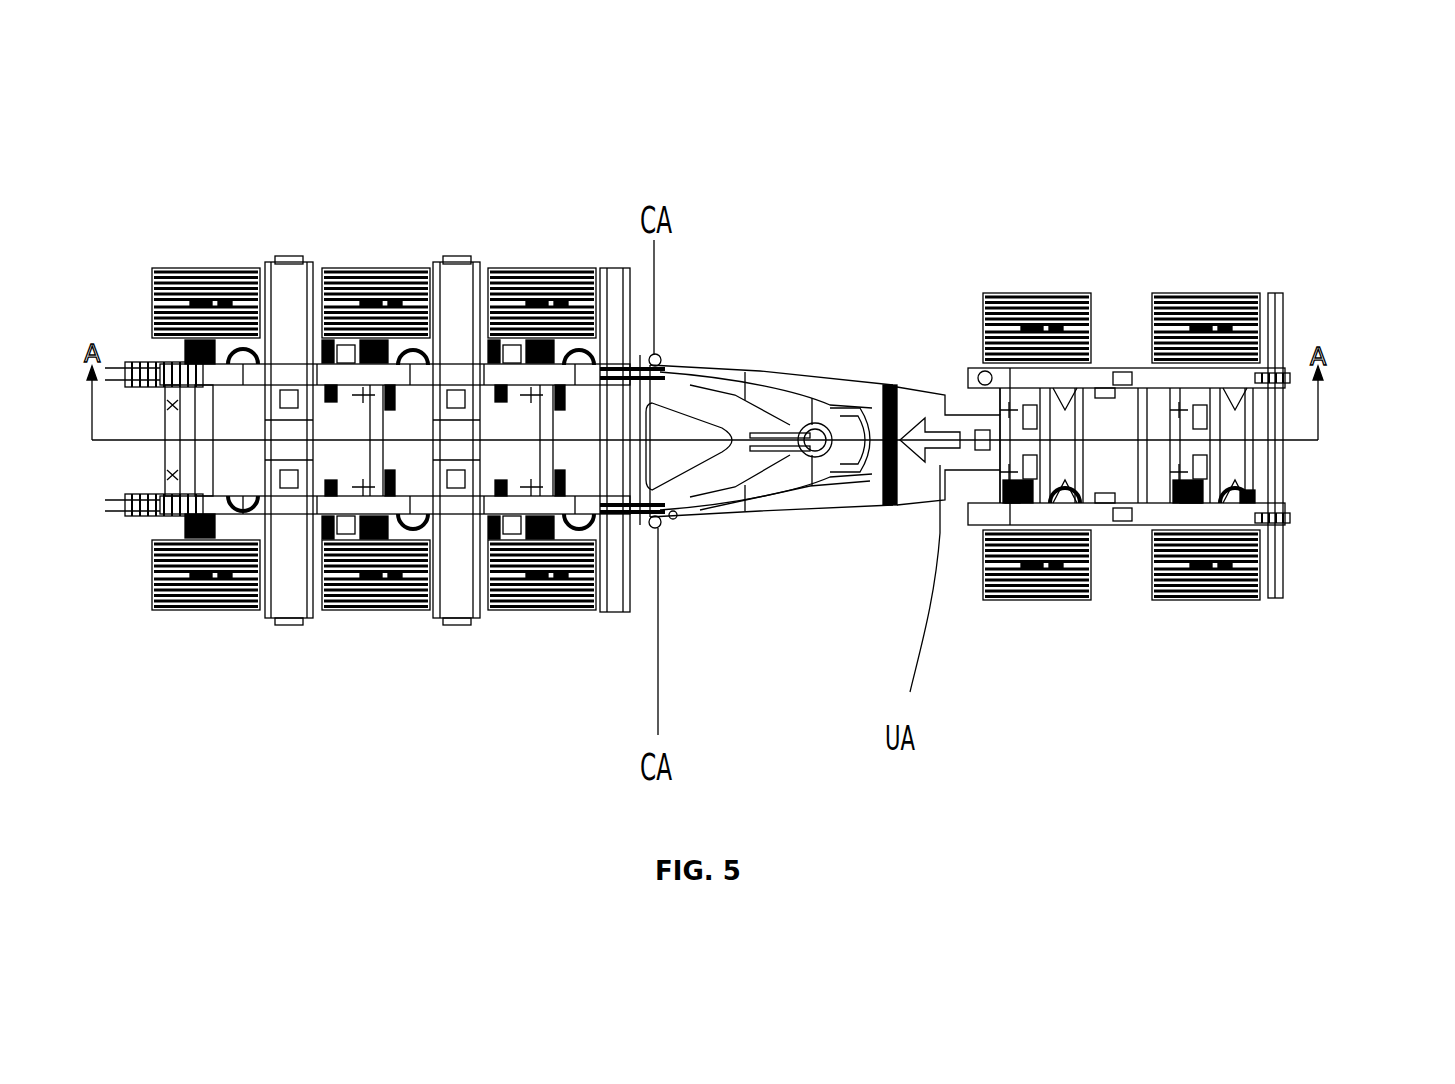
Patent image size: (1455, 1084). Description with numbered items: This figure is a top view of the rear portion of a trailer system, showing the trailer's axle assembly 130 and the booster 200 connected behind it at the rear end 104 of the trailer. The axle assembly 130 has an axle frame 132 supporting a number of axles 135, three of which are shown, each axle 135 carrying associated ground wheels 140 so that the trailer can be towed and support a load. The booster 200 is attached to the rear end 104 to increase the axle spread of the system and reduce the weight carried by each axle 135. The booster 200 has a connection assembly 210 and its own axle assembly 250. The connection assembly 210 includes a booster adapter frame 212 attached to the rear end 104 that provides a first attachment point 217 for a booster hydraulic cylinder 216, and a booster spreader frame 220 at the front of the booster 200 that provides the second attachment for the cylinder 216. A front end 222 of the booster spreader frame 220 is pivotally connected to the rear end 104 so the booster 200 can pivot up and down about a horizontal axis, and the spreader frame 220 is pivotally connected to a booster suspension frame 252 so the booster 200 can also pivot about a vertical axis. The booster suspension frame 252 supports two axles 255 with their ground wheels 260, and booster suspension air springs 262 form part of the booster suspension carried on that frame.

The rear end 104 is at (640, 618).
The axle assembly 130 is at (620, 663).
The axle frame 132 is at (493, 377).
The axle 135 is at (205, 420).
The ground wheel 140 is at (192, 615).
The booster 200 is at (1150, 210).
The connection assembly 210 is at (647, 360).
The booster adapter frame 212 is at (712, 412).
The booster hydraulic cylinder 216 is at (836, 470).
The first attachment point 217 is at (763, 437).
The booster spreader frame 220 is at (787, 507).
The front end 222 is at (673, 520).
The axle assembly 250 is at (1262, 642).
The booster suspension frame 252 is at (1190, 505).
The axle 255 is at (1250, 495).
The ground wheel 260 is at (1033, 292).
The booster suspension air spring 262 is at (1103, 368).